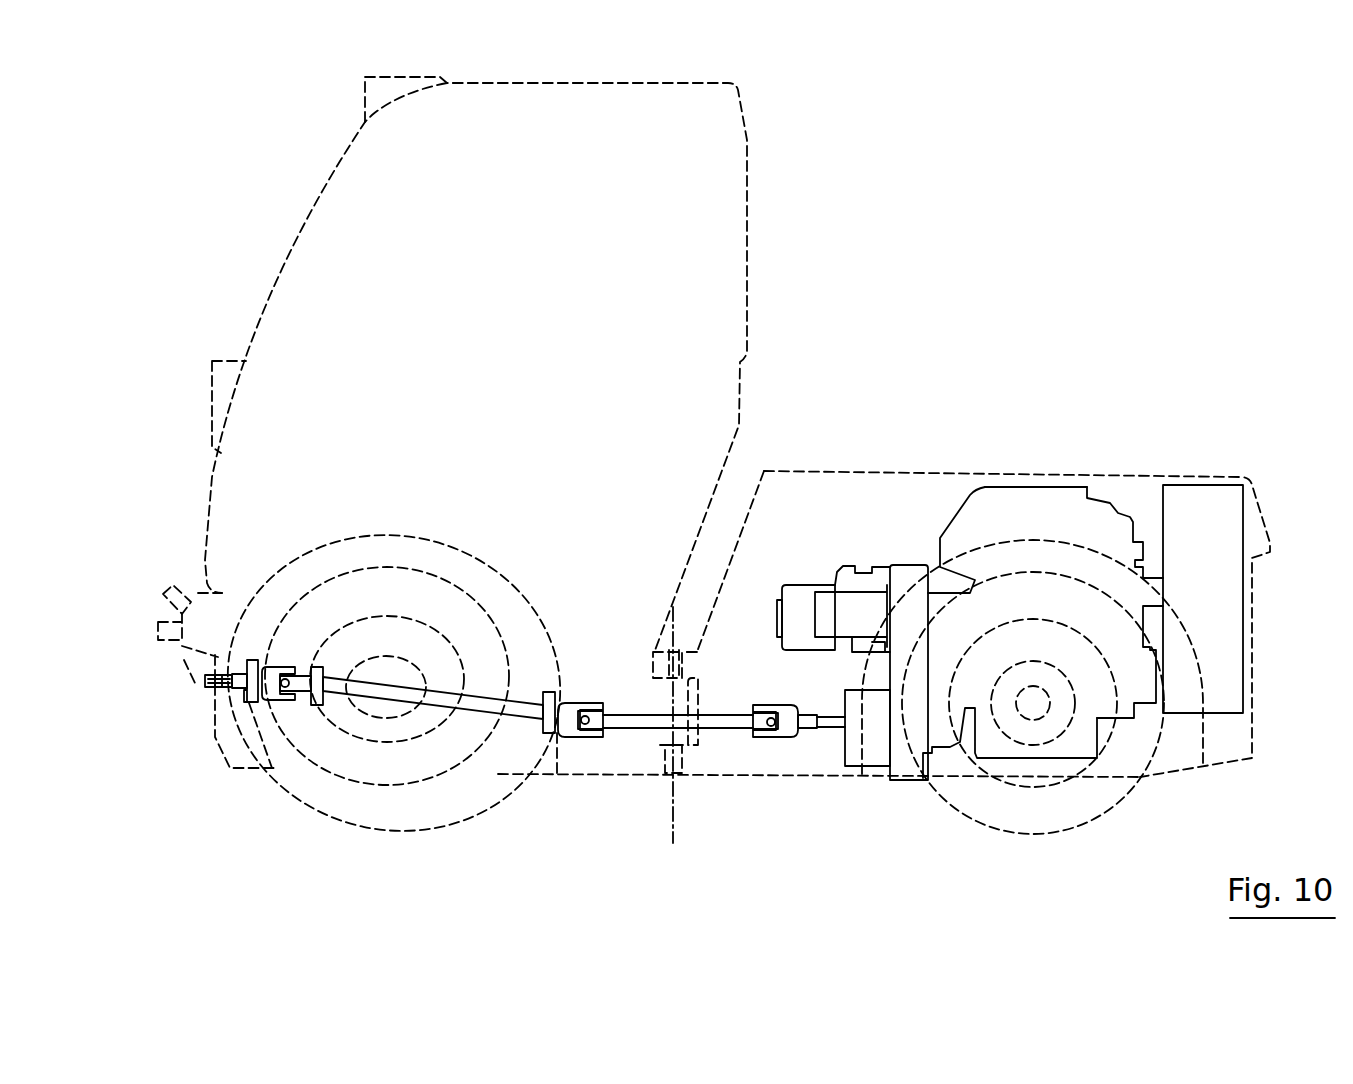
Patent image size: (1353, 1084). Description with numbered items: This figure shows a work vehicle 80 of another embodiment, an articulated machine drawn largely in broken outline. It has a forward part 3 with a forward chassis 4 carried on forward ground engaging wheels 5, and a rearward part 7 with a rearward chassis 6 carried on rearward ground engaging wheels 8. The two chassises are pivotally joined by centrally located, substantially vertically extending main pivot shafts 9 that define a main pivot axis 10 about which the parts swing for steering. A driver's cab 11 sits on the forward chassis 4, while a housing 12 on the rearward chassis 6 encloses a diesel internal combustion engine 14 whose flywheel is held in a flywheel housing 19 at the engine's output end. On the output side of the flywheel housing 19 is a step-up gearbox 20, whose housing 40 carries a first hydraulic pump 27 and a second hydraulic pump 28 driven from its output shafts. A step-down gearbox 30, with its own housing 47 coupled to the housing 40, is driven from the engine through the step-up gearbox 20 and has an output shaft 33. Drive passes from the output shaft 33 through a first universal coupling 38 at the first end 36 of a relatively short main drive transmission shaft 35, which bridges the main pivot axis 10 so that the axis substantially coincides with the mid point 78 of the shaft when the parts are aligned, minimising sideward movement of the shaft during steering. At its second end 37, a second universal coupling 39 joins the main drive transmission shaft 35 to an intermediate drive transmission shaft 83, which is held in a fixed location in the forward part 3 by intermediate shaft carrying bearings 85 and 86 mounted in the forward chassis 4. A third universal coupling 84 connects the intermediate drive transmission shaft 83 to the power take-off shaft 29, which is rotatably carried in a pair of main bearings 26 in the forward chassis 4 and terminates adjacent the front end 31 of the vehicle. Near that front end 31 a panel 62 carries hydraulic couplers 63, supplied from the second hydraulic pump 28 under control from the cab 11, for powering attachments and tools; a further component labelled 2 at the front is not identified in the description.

The work vehicle 80 is at (905, 300).
The driver's cab 11 is at (308, 220).
The housing 12 is at (823, 475).
The internal combustion engine 14 is at (1062, 488).
The step-up gearbox 20 is at (905, 573).
The housing of the step-up gearbox 40 is at (920, 567).
The first hydraulic pump 27 is at (798, 597).
The second hydraulic pump 28 is at (873, 582).
The rearward part 7 is at (1165, 782).
The rearward ground engaging wheels 8 is at (1013, 835).
The flywheel housing 19 is at (947, 747).
The step-down gearbox 30 is at (870, 757).
The housing of the step-down gearbox 47 is at (878, 753).
The rearward chassis 6 is at (827, 780).
The forward part 3 is at (575, 778).
The forward chassis 4 is at (542, 777).
The forward ground engaging wheels 5 is at (350, 828).
The intermediate drive transmission shaft 83 is at (430, 693).
The third universal coupling 84 is at (278, 668).
The intermediate shaft carrying bearing 85 is at (547, 733).
The intermediate shaft carrying bearing 86 is at (305, 705).
The second universal coupling 39 is at (580, 702).
The second end 37 is at (615, 727).
The mid point 78 is at (673, 715).
The main drive transmission shaft 35 is at (720, 715).
The first end 36 is at (757, 727).
The first universal coupling 38 is at (773, 737).
The output shaft 33 is at (817, 715).
The main pivot shafts 9 is at (653, 660).
The main pivot axis 10 is at (675, 833).
The front PTO shaft 2 is at (195, 680).
The power take-off shaft 29 is at (193, 685).
The front end 31 is at (185, 665).
The main bearings 26 is at (243, 697).
The panel 62 is at (180, 613).
The hydraulic couplers 63 is at (153, 630).